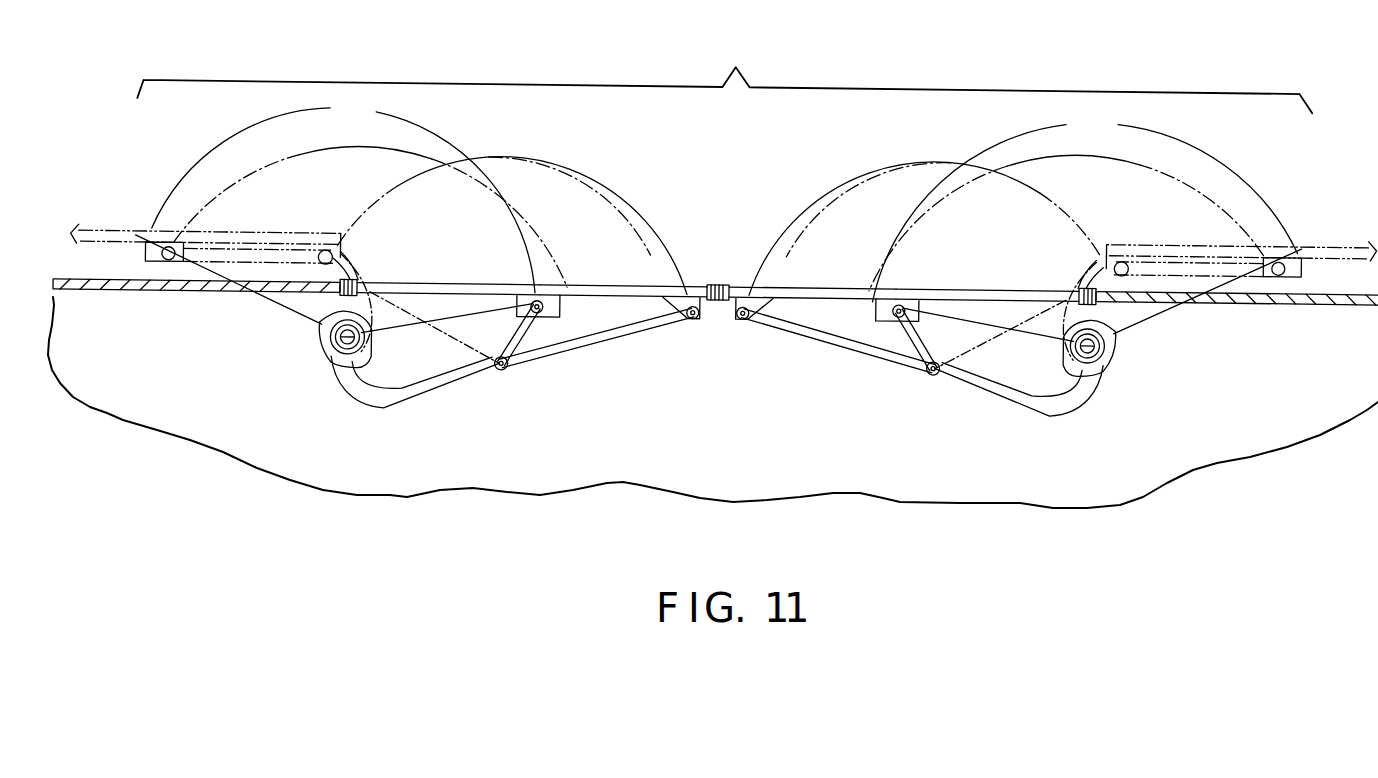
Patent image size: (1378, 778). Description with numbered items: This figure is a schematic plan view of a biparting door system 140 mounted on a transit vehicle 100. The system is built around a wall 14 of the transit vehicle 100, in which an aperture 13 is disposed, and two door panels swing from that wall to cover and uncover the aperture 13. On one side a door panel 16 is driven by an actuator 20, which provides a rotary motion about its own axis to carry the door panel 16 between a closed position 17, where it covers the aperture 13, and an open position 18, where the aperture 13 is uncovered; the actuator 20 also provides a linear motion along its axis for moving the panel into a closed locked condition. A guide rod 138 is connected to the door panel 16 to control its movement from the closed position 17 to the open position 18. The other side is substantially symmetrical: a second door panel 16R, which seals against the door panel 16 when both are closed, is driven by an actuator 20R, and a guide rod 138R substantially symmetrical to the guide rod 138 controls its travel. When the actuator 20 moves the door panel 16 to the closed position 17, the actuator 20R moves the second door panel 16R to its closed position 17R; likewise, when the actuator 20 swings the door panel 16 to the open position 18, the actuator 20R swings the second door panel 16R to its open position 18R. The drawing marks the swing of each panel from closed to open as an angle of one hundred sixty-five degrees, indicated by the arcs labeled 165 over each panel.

The aperture 13 is at (725, 71).
The wall 14 is at (117, 287).
The door panel 16 is at (445, 286).
The closed position 17 is at (610, 287).
The second door panel 16R is at (828, 287).
The closed position of second door panel 17R is at (998, 287).
The open position 18 is at (246, 242).
The open position of second door panel 18R is at (1200, 248).
The actuator 20 is at (323, 349).
The second actuator 20R is at (1115, 350).
The guide rod 138 is at (597, 343).
The second guide rod 138R is at (841, 347).
The biparting door system 140 is at (730, 213).
The transit vehicle 100 is at (740, 465).
The 165 degree swing angle 165 is at (725, 200).